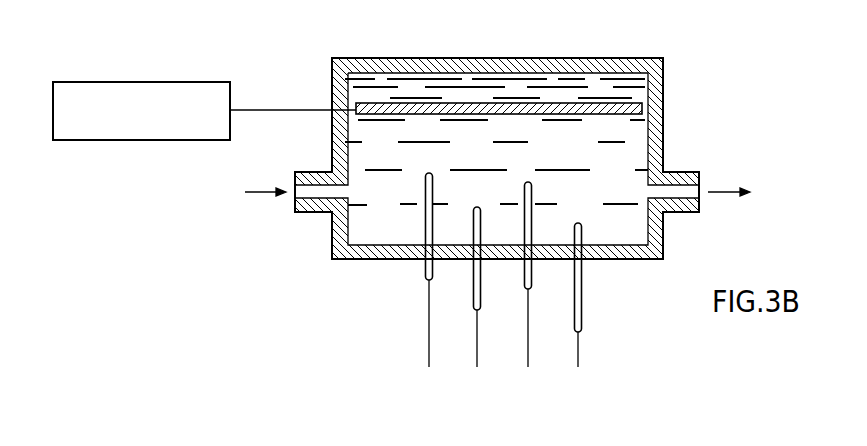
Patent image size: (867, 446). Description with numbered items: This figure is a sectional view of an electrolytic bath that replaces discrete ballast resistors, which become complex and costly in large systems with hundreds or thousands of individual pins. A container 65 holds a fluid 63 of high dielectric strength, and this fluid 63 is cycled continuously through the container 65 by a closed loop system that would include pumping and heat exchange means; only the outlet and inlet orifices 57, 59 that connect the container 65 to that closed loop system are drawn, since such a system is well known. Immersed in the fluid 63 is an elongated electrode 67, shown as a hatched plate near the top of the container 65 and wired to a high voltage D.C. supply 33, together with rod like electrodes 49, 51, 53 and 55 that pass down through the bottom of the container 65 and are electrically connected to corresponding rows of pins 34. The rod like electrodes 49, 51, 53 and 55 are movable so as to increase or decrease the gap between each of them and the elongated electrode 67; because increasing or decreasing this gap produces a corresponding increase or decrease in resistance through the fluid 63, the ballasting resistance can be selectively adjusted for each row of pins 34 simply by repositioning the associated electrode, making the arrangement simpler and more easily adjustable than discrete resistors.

The high voltage D.C. supply 33 is at (135, 82).
The container 65 is at (466, 58).
The elongated electrode 67 is at (641, 101).
The outlet orifice 57 is at (683, 172).
The inlet orifice 59 is at (315, 212).
The fluid 63 is at (373, 235).
The rod like electrode 49 is at (426, 187).
The rod like electrode 51 is at (481, 222).
The rod like electrode 53 is at (532, 194).
The rod like electrode 55 is at (582, 232).
The pins 34 is at (503, 339).